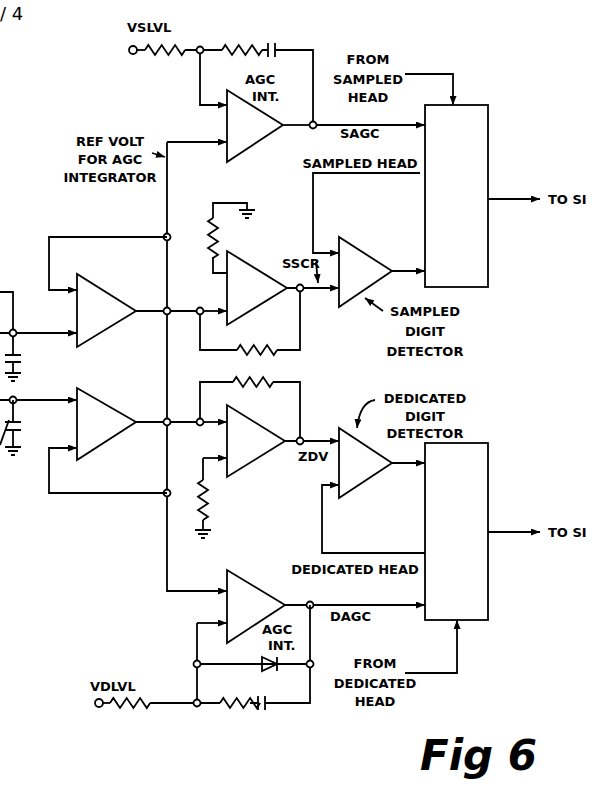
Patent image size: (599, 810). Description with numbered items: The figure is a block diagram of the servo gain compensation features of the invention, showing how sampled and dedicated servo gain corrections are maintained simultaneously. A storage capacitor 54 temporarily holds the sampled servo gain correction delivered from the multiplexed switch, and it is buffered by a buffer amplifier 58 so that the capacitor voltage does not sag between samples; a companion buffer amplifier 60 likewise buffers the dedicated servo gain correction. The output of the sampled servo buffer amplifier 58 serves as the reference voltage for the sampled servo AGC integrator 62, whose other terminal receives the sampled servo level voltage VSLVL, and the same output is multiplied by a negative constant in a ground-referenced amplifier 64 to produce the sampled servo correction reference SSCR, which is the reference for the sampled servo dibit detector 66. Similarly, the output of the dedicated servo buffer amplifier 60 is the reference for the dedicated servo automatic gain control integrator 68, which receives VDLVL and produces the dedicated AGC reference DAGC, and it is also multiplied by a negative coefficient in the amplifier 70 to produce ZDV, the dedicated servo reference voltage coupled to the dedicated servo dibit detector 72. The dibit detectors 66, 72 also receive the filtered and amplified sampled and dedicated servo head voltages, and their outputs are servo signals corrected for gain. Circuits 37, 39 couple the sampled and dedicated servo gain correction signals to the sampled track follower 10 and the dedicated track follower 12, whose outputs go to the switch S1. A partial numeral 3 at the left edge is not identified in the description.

The sampled head signal input 3 is at (6, 306).
The sampled track follower 10 is at (480, 101).
The dedicated track follower 12 is at (490, 596).
The circuit 37 is at (399, 122).
The circuit 39 is at (405, 472).
The storage capacitor 54 is at (20, 347).
The buffer amplifier 58 is at (108, 338).
The buffer amplifier 60 is at (102, 394).
The sampled servo AGC integrator 62 is at (225, 124).
The amplifier 64 is at (246, 255).
The sampled servo dibit detector 66 is at (341, 238).
The dedicated servo automatic gain control integrator 68 is at (240, 568).
The amplifier 70 is at (246, 470).
The dedicated servo dibit detector 72 is at (347, 500).